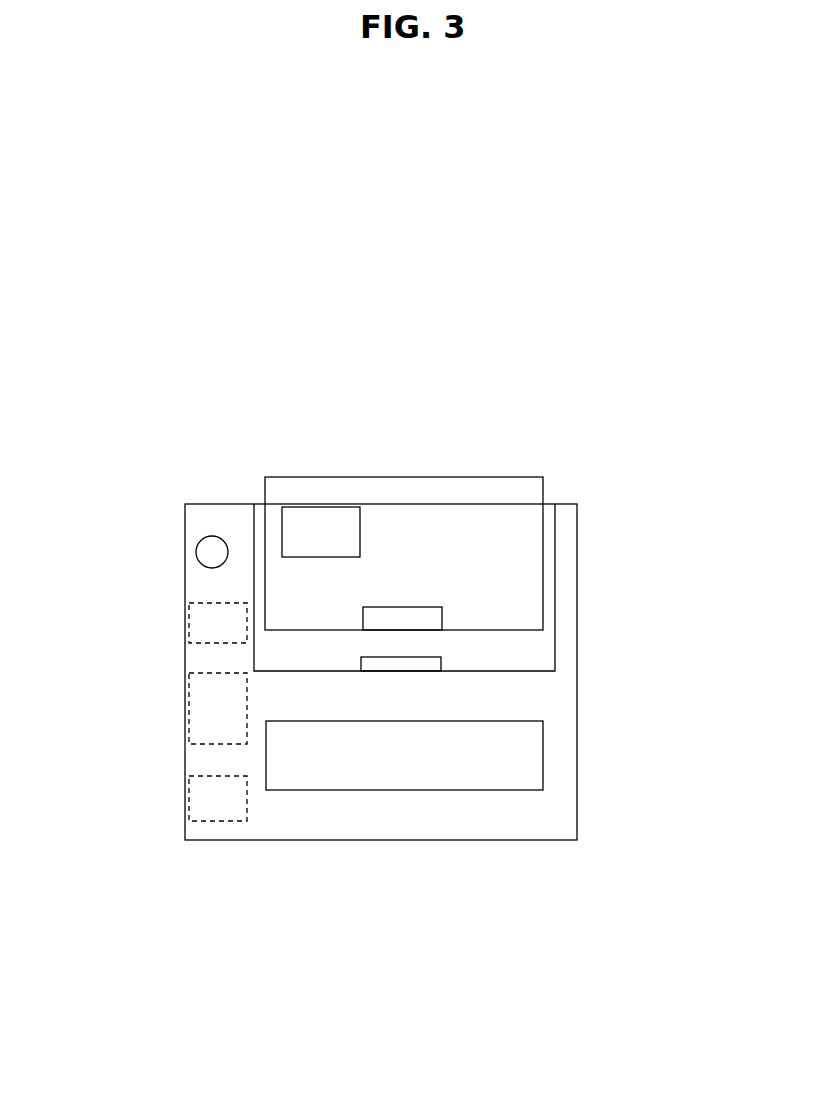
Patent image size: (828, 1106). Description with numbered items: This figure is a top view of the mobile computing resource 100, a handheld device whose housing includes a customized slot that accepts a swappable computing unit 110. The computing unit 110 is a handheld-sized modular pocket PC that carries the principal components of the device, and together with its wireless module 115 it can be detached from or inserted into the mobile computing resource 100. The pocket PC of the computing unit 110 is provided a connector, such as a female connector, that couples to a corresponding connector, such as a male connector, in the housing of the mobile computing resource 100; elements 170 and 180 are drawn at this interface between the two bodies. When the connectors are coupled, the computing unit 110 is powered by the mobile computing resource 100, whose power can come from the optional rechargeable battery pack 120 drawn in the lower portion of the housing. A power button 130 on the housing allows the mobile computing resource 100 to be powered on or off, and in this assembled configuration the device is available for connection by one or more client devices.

The mobile computing resource 100 is at (402, 340).
The computing unit 110 is at (405, 480).
The wireless module 115 is at (312, 533).
The battery pack 120 is at (379, 776).
The power button 130 is at (197, 553).
The first connector 170 is at (403, 617).
The second connector 180 is at (425, 663).